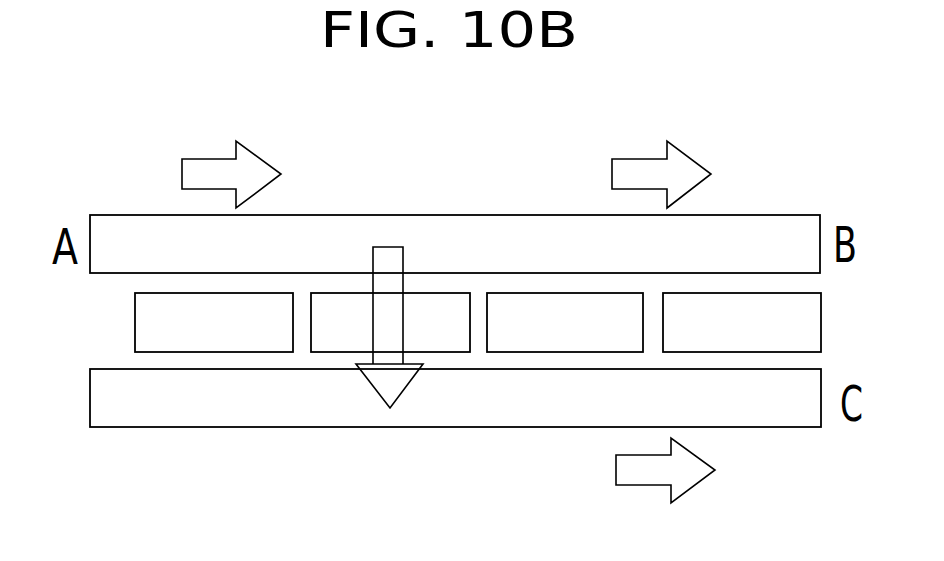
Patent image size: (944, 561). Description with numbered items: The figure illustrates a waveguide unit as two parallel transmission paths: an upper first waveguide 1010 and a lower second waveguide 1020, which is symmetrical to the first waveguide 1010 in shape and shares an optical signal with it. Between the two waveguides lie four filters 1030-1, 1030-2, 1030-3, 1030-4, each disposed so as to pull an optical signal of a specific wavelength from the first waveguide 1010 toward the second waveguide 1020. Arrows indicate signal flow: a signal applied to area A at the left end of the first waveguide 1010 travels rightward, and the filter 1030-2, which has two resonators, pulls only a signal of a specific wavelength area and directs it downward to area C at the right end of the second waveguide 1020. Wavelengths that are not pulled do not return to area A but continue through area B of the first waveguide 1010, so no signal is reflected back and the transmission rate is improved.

The first waveguide 1010 is at (413, 215).
The second waveguide 1020 is at (433, 427).
The filter 1030-1 is at (218, 352).
The filter 1030-2 is at (340, 352).
The filter 1030-3 is at (528, 352).
The filter 1030-4 is at (765, 352).